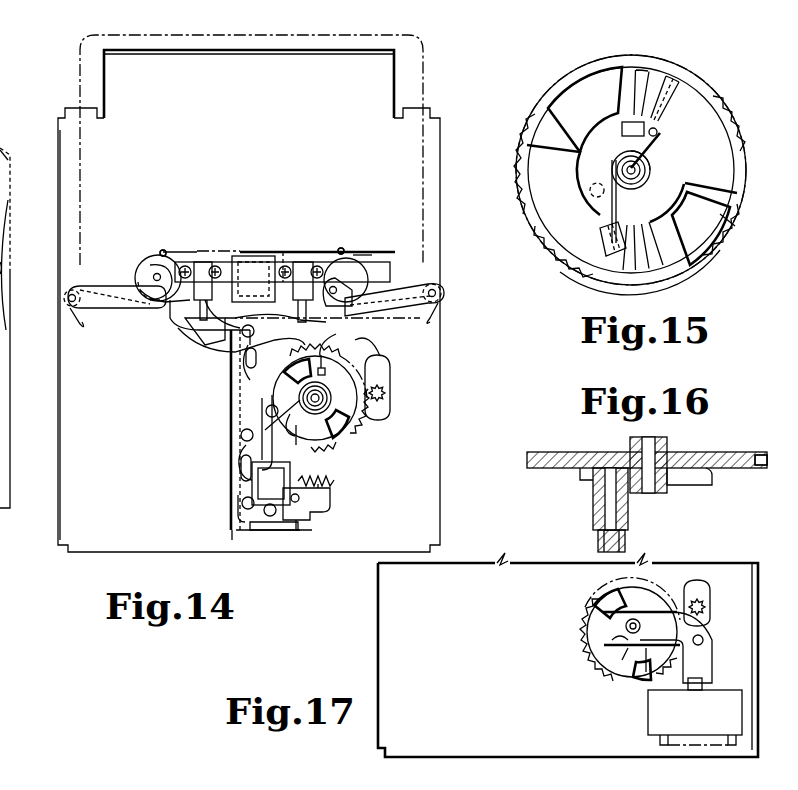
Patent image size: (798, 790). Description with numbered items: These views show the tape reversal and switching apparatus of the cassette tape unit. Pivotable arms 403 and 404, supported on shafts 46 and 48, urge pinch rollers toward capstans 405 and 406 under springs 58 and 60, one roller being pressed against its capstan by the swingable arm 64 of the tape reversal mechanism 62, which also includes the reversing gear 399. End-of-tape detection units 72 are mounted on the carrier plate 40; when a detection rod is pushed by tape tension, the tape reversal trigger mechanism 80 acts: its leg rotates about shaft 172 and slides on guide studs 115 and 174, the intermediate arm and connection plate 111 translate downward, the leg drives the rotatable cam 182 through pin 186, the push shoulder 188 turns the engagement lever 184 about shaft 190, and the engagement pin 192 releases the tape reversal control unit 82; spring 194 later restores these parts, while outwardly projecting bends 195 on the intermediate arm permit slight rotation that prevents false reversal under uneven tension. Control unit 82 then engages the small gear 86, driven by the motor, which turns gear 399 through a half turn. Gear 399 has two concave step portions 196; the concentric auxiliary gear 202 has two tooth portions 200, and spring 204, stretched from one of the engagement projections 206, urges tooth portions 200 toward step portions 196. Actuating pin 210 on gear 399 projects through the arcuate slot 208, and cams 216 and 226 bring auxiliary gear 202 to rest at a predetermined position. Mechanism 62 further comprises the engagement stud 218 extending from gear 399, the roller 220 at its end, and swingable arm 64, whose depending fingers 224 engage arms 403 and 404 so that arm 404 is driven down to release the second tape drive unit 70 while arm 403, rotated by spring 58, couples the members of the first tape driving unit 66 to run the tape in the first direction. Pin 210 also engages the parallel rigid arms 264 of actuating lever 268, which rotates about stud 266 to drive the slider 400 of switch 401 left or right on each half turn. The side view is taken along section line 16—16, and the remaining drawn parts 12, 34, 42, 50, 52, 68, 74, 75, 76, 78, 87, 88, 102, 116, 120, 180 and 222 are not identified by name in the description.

In FIG. 14, the frame 12 is at (106, 543).
In FIG. 17, the frame 12 is at (380, 626).
In FIG. 14, the cover 16 is at (84, 82).
In FIG. 15, the cover 16 is at (536, 54).
In FIG. 14, the bracket 34 is at (318, 512).
In FIG. 14, the carrier plate 40 is at (300, 530).
In FIG. 14, the frame plate 42 is at (250, 252).
In FIG. 14, the shaft 46 is at (66, 298).
In FIG. 14, the shaft 48 is at (438, 294).
In FIG. 14, the pawl 50 is at (140, 274).
In FIG. 14, the right roller 52 is at (368, 264).
In FIG. 14, the spring 58 is at (72, 320).
In FIG. 14, the spring 60 is at (434, 323).
In FIG. 14, the tape reversal mechanism 62 is at (246, 338).
In FIG. 14, the swingable arm 64 is at (8, 304).
In FIG. 14, the first tape driving unit 66 is at (142, 258).
In FIG. 14, the slot 68 is at (283, 250).
In FIG. 14, the second tape drive unit 70 is at (356, 256).
In FIG. 14, the end of tape detection units 72 is at (184, 262).
In FIG. 14, the post 74 is at (207, 262).
In FIG. 14, the direction of motion 75 is at (88, 404).
In FIG. 14, the post 76 is at (300, 262).
In FIG. 14, the cam 78 is at (190, 328).
In FIG. 14, the tape reversal trigger mechanism 80 is at (233, 536).
In FIG. 14, the tape reversal control unit 82 is at (354, 447).
In FIG. 15, the tape reversal control unit 82 is at (700, 268).
In FIG. 16, the tape reversal control unit 82 is at (731, 453).
In FIG. 17, the tape reversal control unit 82 is at (673, 581).
In FIG. 14, the small gear 86 is at (386, 398).
In FIG. 17, the small gear 86 is at (706, 604).
In FIG. 15, the flange 87 is at (738, 226).
In FIG. 16, the flange 87 is at (735, 468).
In FIG. 17, the flange 87 is at (612, 582).
In FIG. 17, the base 88 is at (377, 740).
In FIG. 14, the wheel 102 is at (0, 228).
In FIG. 14, the connection plate 111 is at (232, 396).
In FIG. 14, the guide stud 115 is at (250, 364).
In FIG. 14, the pawl 116 is at (330, 302).
In FIG. 14, the lever 120 is at (246, 446).
In FIG. 14, the shaft 172 is at (236, 334).
In FIG. 14, the guide stud 174 is at (240, 484).
In FIG. 14, the block 180 is at (276, 520).
In FIG. 14, the rotatable cam 182 is at (256, 532).
In FIG. 14, the engagement lever 184 is at (256, 432).
In FIG. 14, the pin 186 is at (240, 512).
In FIG. 14, the push shoulder 188 is at (246, 468).
In FIG. 14, the shaft 190 is at (268, 413).
In FIG. 14, the engagement pin 192 is at (292, 432).
In FIG. 14, the spring 194 is at (336, 484).
In FIG. 14, the outwardly projecting bends 195 is at (274, 306).
In FIG. 15, the concave step portions 196 is at (740, 152).
In FIG. 15, the tooth portions 200 is at (722, 104).
In FIG. 14, the auxiliary rotatable gear 202 is at (384, 356).
In FIG. 15, the auxiliary rotatable gear 202 is at (540, 193).
In FIG. 16, the auxiliary rotatable gear 202 is at (578, 452).
In FIG. 17, the auxiliary rotatable gear 202 is at (580, 620).
In FIG. 15, the spring 204 is at (652, 156).
In FIG. 15, the engagement projections 206 is at (659, 104).
In FIG. 15, the elongated arcuate slot 208 is at (618, 128).
In FIG. 15, the actuating pin 210 is at (656, 132).
In FIG. 17, the actuating pin 210 is at (606, 672).
In FIG. 15, the cam 216 is at (688, 238).
In FIG. 15, the engagement stud 218 is at (594, 192).
In FIG. 16, the engagement stud 218 is at (608, 491).
In FIG. 14, the roller 220 is at (328, 398).
In FIG. 16, the roller 220 is at (598, 540).
In FIG. 14, the key 222 is at (326, 392).
In FIG. 14, the fingers 224 is at (165, 306).
In FIG. 15, the cam 226 is at (566, 87).
In FIG. 17, the rigid arms 264 is at (596, 608).
In FIG. 17, the stud 266 is at (704, 642).
In FIG. 17, the actuating lever 268 is at (706, 668).
In FIG. 14, the reversing gear 399 is at (358, 412).
In FIG. 17, the slider 400 is at (690, 684).
In FIG. 17, the switch 401 is at (686, 722).
In FIG. 14, the pivotable arm 403 is at (106, 286).
In FIG. 14, the pivotable arm 404 is at (384, 292).
In FIG. 14, the capstan 405 is at (163, 250).
In FIG. 14, the capstan 406 is at (342, 249).